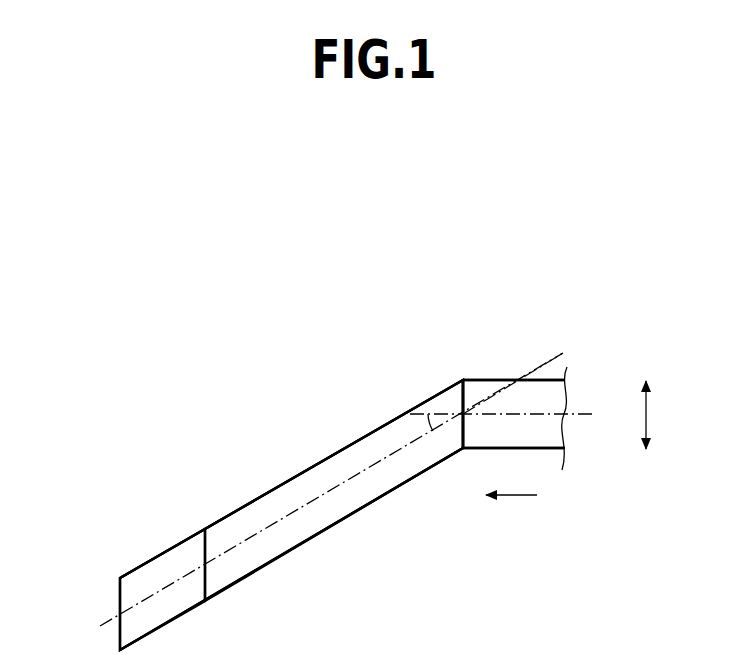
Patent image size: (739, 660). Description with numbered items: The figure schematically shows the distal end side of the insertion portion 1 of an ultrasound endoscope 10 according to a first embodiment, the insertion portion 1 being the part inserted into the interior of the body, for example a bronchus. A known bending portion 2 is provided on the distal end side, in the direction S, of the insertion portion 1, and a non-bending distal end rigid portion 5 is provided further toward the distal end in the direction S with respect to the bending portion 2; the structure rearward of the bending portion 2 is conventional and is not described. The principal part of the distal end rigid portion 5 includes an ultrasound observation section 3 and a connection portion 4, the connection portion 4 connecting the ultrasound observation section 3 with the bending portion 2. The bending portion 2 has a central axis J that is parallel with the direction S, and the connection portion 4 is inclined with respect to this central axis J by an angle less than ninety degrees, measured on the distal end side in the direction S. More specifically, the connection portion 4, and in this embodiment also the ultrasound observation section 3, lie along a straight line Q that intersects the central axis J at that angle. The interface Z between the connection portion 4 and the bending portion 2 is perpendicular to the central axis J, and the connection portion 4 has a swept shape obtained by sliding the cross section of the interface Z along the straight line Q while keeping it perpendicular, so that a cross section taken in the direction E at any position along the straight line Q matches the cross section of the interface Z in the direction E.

The insertion portion 1 is at (441, 298).
The bending portion 2 is at (545, 448).
The ultrasound observation section 3 is at (170, 560).
The connection portion 4 is at (315, 472).
The distal end rigid portion 5 is at (124, 481).
The ultrasound endoscope 10 is at (484, 359).
The straight line Q is at (343, 481).
The central axis J is at (510, 415).
The interface Z is at (471, 391).
The direction E is at (658, 415).
The direction S is at (511, 483).